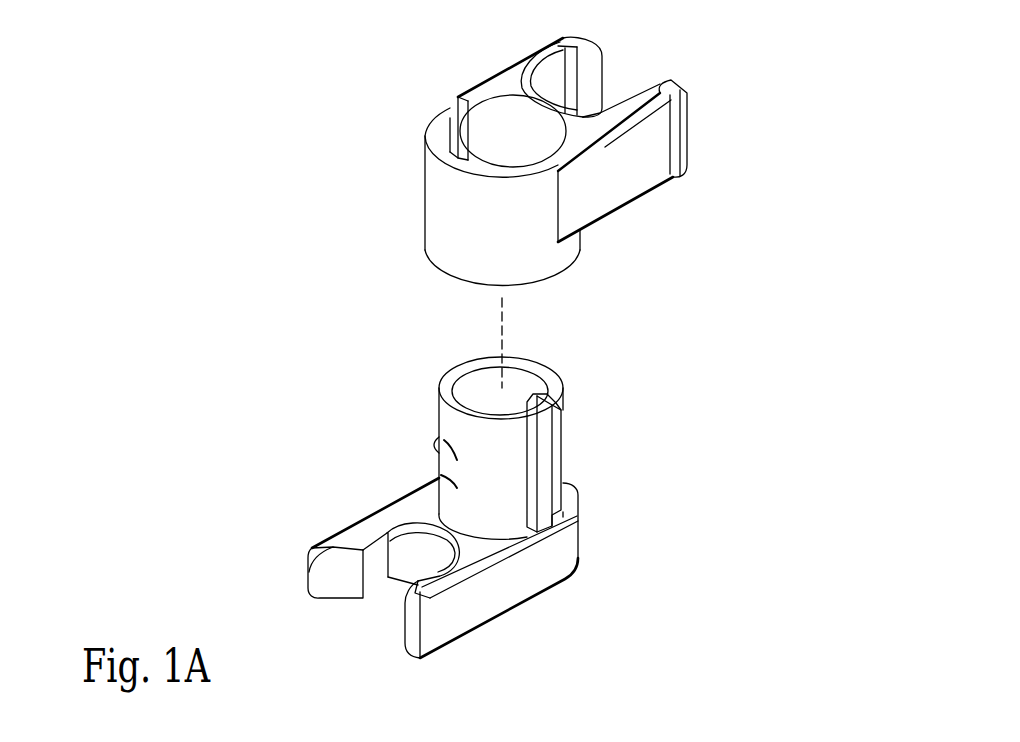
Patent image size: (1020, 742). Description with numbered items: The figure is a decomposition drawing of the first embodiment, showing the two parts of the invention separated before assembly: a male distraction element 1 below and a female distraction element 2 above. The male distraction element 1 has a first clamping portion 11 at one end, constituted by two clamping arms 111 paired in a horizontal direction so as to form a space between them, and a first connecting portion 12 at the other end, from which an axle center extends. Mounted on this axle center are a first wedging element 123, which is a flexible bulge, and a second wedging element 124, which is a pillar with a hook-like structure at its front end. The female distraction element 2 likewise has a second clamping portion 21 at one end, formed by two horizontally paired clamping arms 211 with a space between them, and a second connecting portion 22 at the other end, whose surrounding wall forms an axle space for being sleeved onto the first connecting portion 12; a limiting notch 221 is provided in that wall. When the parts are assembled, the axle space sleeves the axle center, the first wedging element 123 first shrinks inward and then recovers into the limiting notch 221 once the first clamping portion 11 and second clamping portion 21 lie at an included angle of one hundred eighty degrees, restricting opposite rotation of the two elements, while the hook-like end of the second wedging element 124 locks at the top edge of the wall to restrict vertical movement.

The male distraction element 1 is at (416, 502).
The first clamping portion 11 is at (369, 568).
The clamping arms 111 is at (330, 582).
The first connecting portion 12 is at (496, 442).
The first wedging element 123 is at (435, 441).
The second wedging element 124 is at (565, 430).
The female distraction element 2 is at (520, 154).
The second clamping portion 21 is at (611, 132).
The clamping arms 211 is at (603, 64).
The second connecting portion 22 is at (428, 158).
The limiting notch 221 is at (453, 104).